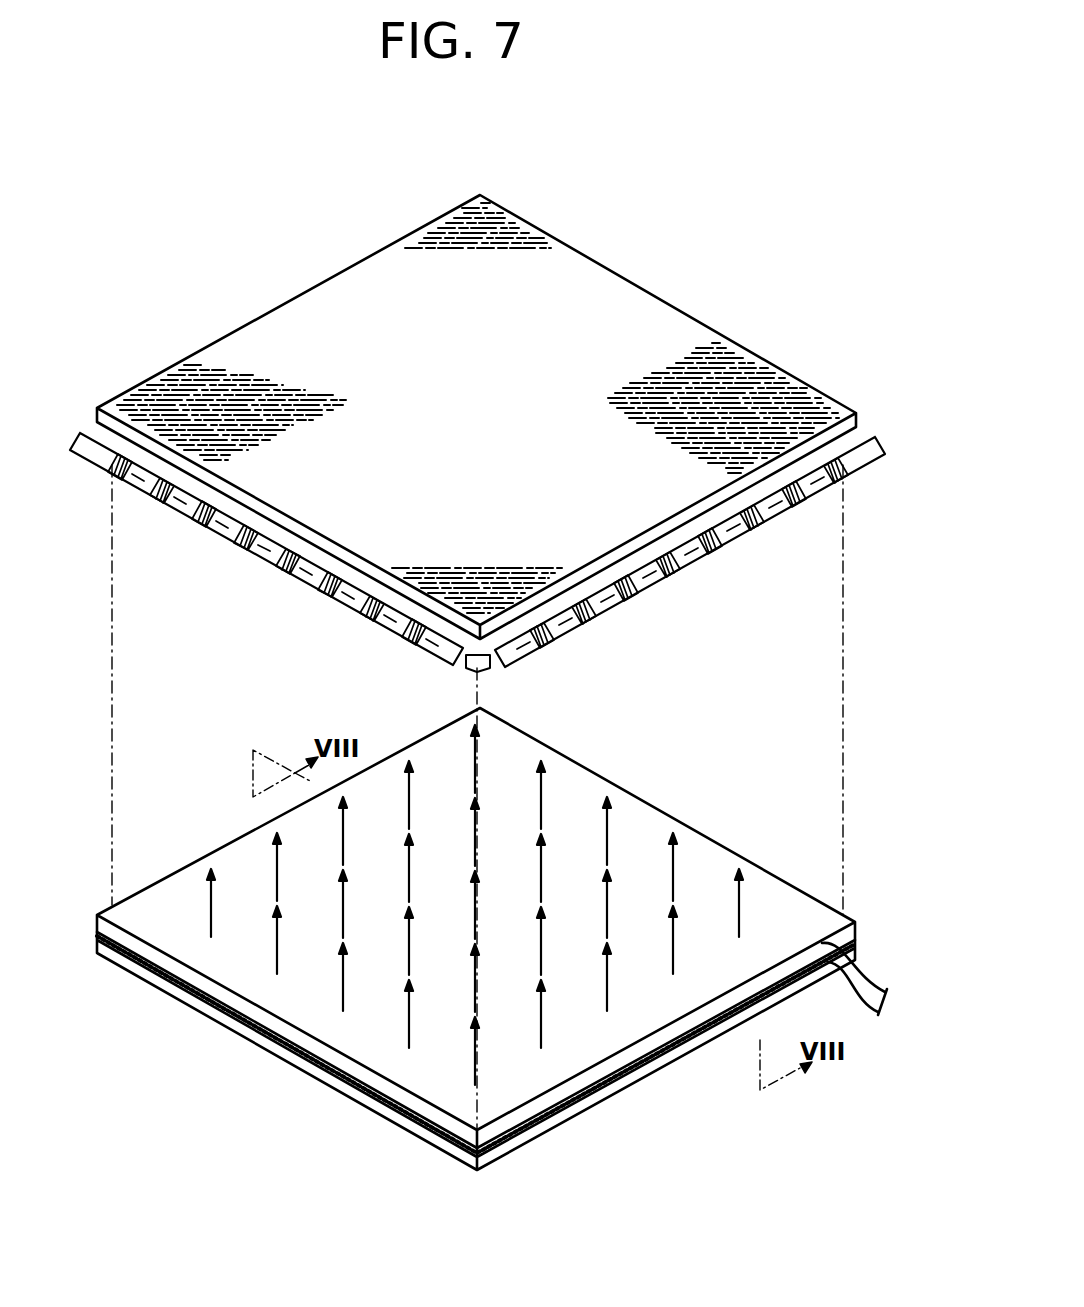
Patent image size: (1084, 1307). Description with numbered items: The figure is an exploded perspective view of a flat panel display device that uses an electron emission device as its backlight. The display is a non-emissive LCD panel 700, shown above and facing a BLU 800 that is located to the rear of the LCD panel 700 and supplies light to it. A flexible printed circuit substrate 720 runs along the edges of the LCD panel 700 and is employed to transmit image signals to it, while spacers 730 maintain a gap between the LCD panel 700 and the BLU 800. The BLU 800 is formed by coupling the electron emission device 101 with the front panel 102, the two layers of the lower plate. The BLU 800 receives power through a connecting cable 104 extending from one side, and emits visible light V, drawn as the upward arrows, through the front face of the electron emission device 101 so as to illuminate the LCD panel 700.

The LCD panel 700 is at (702, 282).
The flexible printed circuit substrate 720 is at (862, 433).
The spacers 730 is at (488, 661).
The BLU 800 is at (683, 1148).
The electron emission device 101 is at (525, 1138).
The front panel 102 is at (530, 1078).
The connecting cable 104 is at (858, 982).
The visible light V is at (405, 1020).